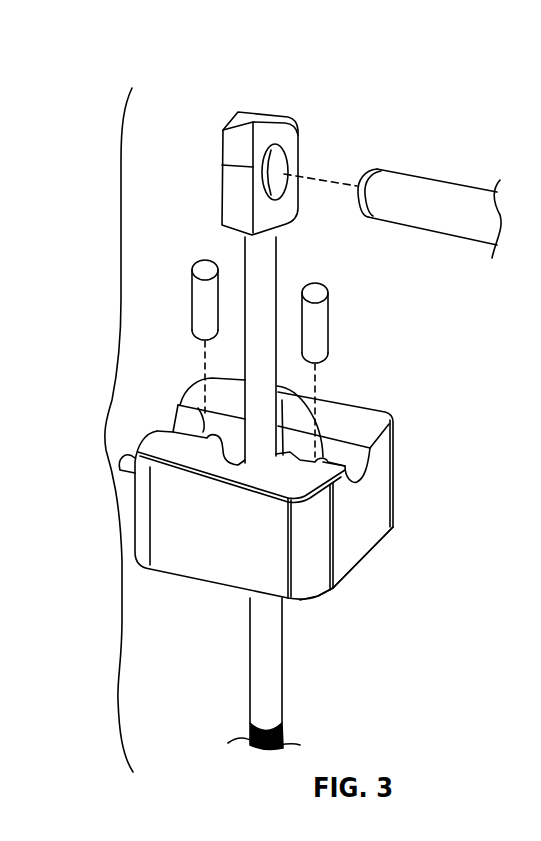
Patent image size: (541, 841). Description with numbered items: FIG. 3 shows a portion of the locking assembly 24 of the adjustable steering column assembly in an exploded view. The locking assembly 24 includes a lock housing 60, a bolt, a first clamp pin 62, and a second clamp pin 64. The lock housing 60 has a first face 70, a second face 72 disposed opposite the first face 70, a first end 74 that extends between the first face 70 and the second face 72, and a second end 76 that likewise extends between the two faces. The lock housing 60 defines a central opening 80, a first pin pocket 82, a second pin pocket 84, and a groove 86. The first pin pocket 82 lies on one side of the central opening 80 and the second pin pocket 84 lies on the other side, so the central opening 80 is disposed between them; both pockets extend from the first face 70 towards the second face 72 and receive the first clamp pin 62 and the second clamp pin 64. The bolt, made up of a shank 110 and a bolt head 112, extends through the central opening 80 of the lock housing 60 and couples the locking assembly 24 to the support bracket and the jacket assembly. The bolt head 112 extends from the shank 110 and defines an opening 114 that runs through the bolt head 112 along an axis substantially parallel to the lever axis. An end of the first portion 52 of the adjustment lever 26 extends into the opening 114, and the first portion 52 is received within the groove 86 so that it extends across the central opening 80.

The locking assembly 24 is at (105, 431).
The adjustment lever 26 is at (432, 177).
The first portion 52 is at (470, 197).
The lock housing 60 is at (297, 477).
The first clamp pin 62 is at (334, 312).
The second clamp pin 64 is at (202, 314).
The first face 70 is at (304, 438).
The second face 72 is at (402, 540).
The first end 74 is at (282, 492).
The second end 76 is at (122, 455).
The central opening 80 is at (279, 395).
The first pin pocket 82 is at (298, 392).
The second pin pocket 84 is at (203, 412).
The groove 86 is at (362, 466).
The shank 110 is at (259, 272).
The bolt head 112 is at (289, 145).
The opening 114 is at (283, 162).